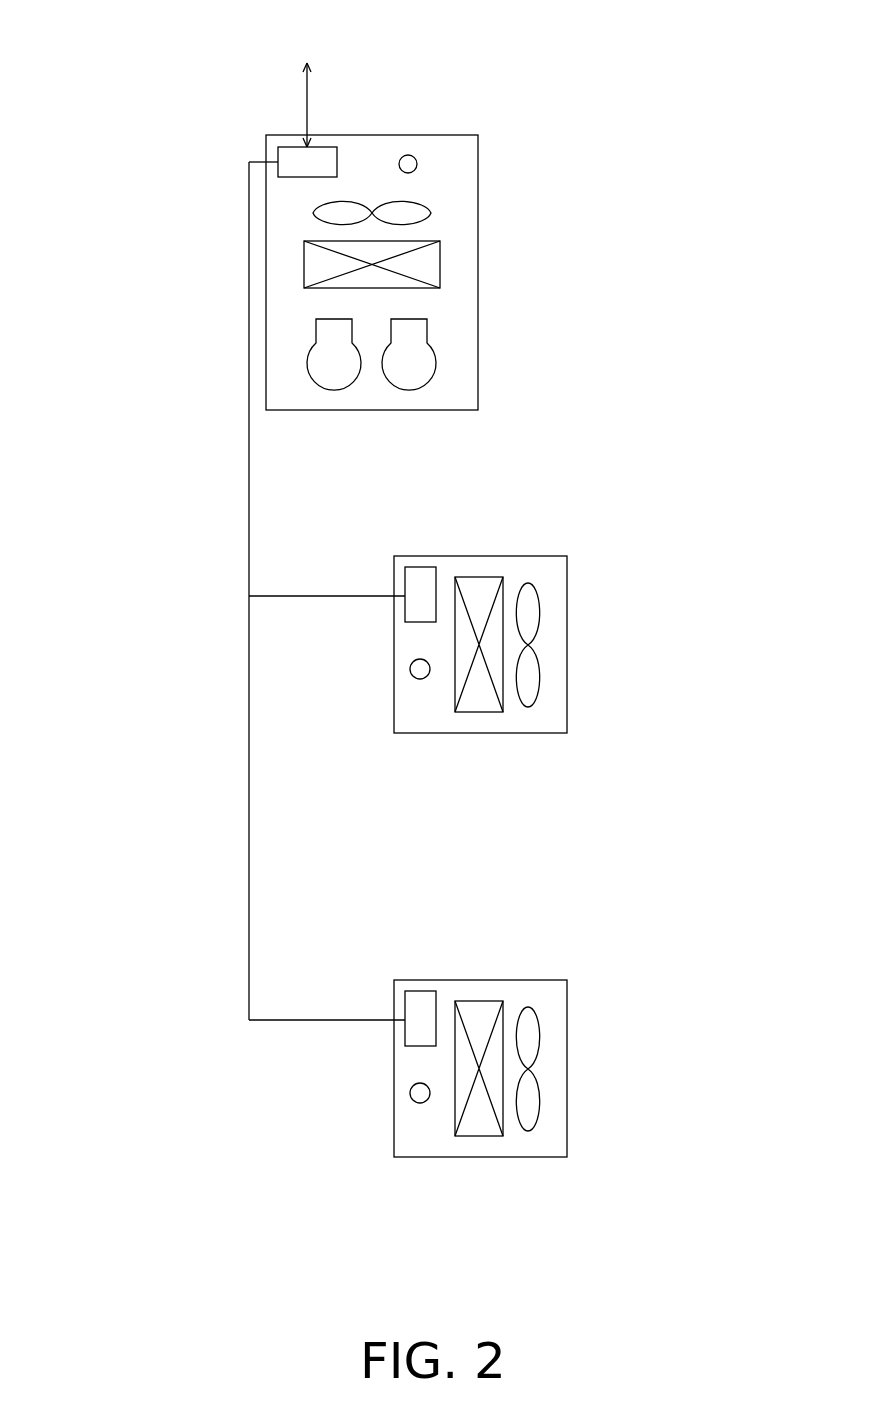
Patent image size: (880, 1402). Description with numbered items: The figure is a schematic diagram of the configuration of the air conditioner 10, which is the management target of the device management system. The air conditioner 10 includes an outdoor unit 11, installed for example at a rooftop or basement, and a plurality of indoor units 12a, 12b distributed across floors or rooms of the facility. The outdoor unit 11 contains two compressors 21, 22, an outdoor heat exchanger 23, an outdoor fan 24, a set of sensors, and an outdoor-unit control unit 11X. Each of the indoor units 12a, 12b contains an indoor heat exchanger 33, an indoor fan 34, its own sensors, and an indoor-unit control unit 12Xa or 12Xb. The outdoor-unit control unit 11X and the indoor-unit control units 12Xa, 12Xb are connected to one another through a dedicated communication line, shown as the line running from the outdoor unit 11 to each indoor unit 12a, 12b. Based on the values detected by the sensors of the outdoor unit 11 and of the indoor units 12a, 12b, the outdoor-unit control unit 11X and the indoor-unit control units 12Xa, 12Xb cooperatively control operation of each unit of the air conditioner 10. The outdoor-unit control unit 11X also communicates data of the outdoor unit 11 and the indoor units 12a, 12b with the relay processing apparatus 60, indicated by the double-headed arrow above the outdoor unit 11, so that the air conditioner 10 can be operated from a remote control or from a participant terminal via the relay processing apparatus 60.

The air conditioner 10 is at (89, 83).
The outdoor unit 11 is at (478, 351).
The outdoor-unit control unit 11X is at (330, 147).
The relay processing apparatus 60 is at (309, 87).
The compressor 21 is at (336, 390).
The compressor 22 is at (411, 390).
The outdoor heat exchanger 23 is at (440, 262).
The outdoor fan 24 is at (431, 211).
The indoor unit 12a is at (567, 675).
The indoor unit 12b is at (567, 1099).
The indoor-unit control unit 12Xa is at (428, 567).
The indoor-unit control unit 12Xb is at (428, 991).
The indoor heat exchanger 33 is at (480, 712).
The indoor fan 34 is at (538, 603).